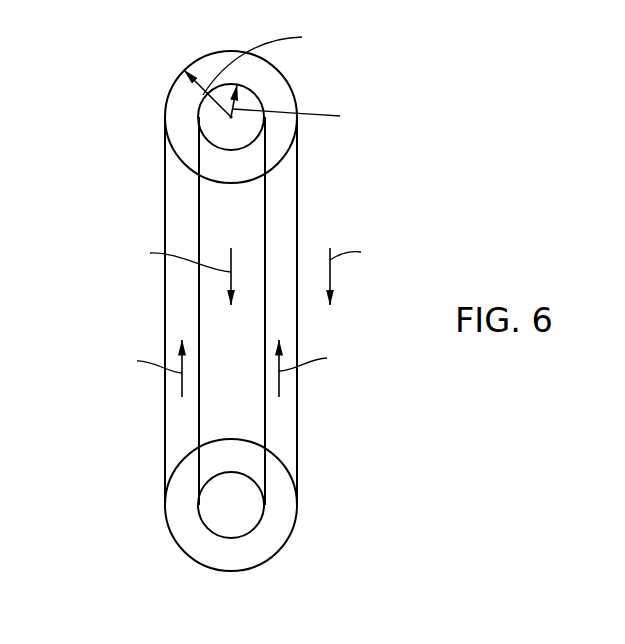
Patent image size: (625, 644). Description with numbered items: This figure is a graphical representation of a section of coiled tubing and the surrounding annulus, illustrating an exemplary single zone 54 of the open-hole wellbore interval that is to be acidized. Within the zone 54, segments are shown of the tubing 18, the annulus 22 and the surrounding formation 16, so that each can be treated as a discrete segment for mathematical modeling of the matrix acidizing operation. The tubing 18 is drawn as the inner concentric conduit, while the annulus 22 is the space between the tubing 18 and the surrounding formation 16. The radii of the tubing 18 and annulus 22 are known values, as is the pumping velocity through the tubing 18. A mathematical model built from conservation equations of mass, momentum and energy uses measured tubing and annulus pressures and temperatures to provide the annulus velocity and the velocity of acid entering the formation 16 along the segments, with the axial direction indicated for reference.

The surrounding formation 16 is at (370, 453).
The tubing 18 is at (265, 198).
The annulus 22 is at (180, 225).
The zone 54 is at (155, 148).